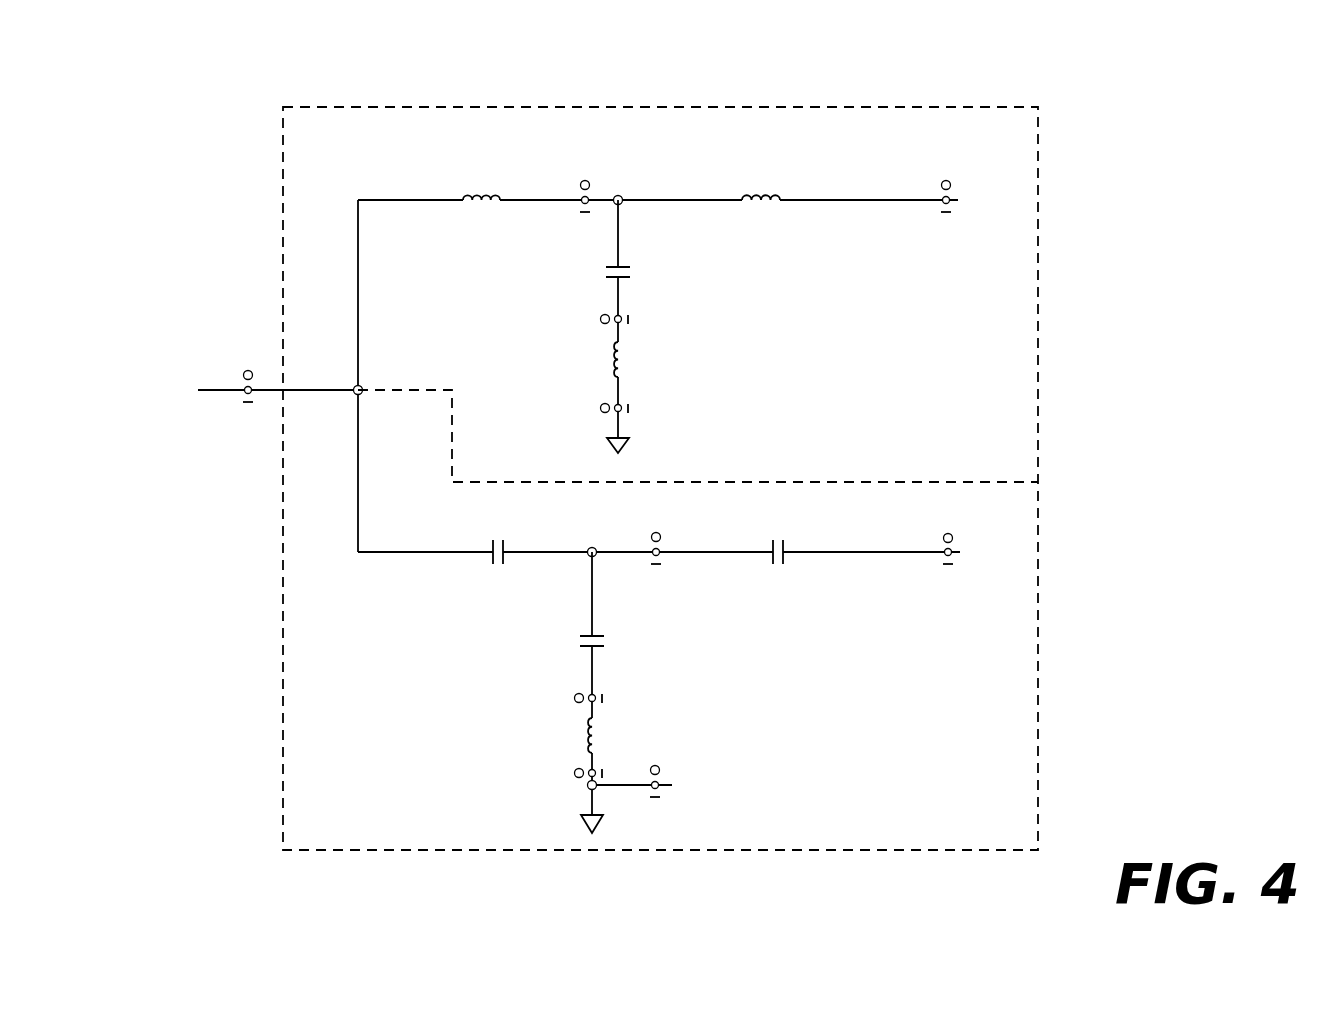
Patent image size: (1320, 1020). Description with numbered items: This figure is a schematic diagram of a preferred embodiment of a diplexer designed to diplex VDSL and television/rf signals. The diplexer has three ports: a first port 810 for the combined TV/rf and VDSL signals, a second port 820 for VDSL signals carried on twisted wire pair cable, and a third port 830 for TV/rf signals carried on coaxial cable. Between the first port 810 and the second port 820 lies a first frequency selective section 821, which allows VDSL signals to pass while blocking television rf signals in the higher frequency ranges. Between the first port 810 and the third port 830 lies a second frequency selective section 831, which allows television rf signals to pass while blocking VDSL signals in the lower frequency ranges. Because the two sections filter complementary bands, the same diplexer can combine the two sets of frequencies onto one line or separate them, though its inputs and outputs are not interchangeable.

The first port 810 is at (248, 373).
The second port 820 is at (974, 185).
The first frequency selective section 821 is at (698, 248).
The third port 830 is at (969, 540).
The second frequency selective section 831 is at (777, 663).